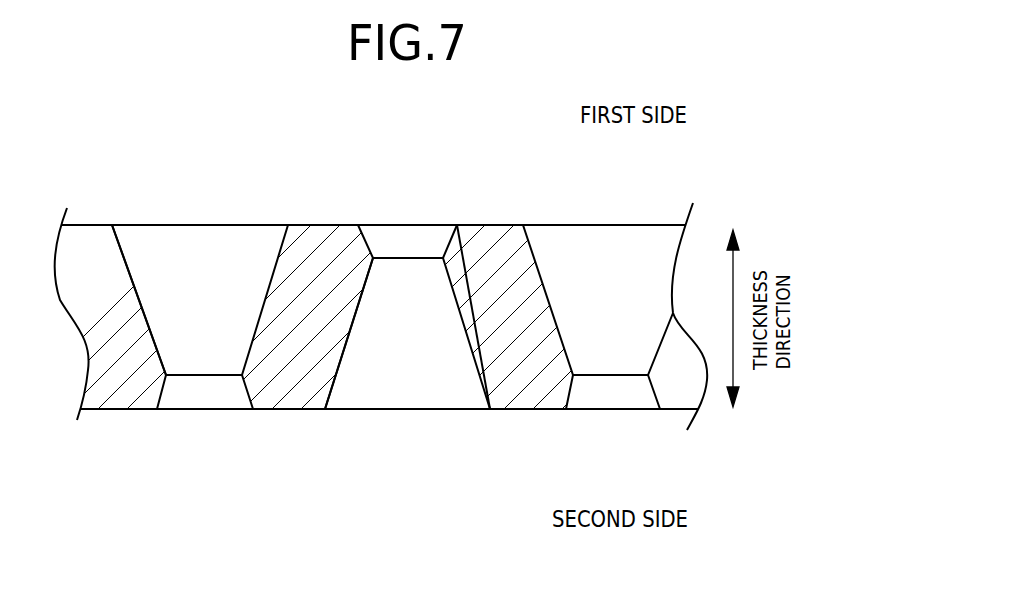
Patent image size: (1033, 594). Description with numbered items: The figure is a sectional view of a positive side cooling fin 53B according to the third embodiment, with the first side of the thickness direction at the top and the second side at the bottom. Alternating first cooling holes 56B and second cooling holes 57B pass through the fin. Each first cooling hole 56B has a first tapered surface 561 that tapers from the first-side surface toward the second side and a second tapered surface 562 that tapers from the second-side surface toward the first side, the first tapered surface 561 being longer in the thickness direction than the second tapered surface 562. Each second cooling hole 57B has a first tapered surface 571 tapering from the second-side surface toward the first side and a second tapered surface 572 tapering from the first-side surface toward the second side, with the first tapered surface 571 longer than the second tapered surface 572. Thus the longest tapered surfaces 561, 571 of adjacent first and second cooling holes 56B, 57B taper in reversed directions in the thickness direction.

The positive side cooling fin 53B is at (467, 225).
The first cooling hole 56B is at (185, 273).
The first tapered surface 561 is at (137, 267).
The second tapered surface 562 is at (167, 393).
The second cooling hole 57B is at (407, 360).
The first tapered surface 571 is at (338, 375).
The second tapered surface 572 is at (370, 247).